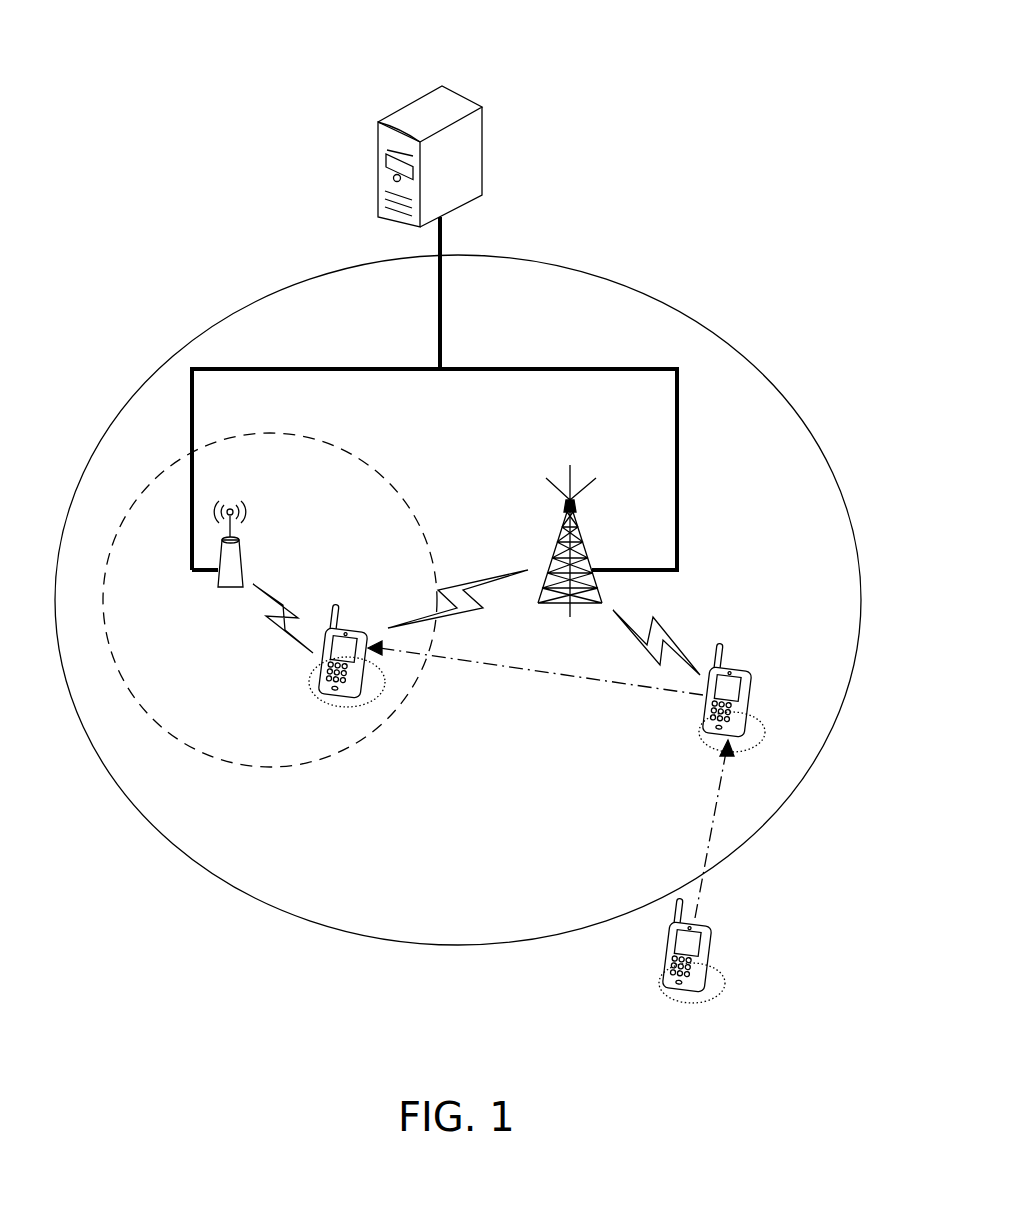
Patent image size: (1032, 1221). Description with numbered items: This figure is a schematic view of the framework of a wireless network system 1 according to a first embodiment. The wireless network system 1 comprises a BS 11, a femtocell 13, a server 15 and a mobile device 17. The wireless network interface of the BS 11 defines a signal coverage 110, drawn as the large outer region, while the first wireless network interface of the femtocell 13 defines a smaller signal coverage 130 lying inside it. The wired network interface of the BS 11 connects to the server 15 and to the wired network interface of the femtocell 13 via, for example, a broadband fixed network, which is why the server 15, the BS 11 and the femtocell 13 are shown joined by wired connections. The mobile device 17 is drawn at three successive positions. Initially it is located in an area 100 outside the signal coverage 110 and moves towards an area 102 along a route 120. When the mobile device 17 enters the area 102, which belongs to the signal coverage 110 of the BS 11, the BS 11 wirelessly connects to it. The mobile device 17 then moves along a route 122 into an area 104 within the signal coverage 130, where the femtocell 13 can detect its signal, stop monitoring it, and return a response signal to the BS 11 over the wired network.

The wireless network system 1 is at (613, 87).
The signal coverage 110 is at (588, 273).
The signal coverage 130 is at (355, 458).
The server 15 is at (483, 160).
The BS 11 is at (557, 548).
The femtocell 13 is at (232, 592).
The mobile device 17 is at (353, 628).
The area 100 is at (663, 976).
The area 102 is at (705, 725).
The area 104 is at (310, 672).
The route 120 is at (710, 838).
The route 122 is at (567, 680).